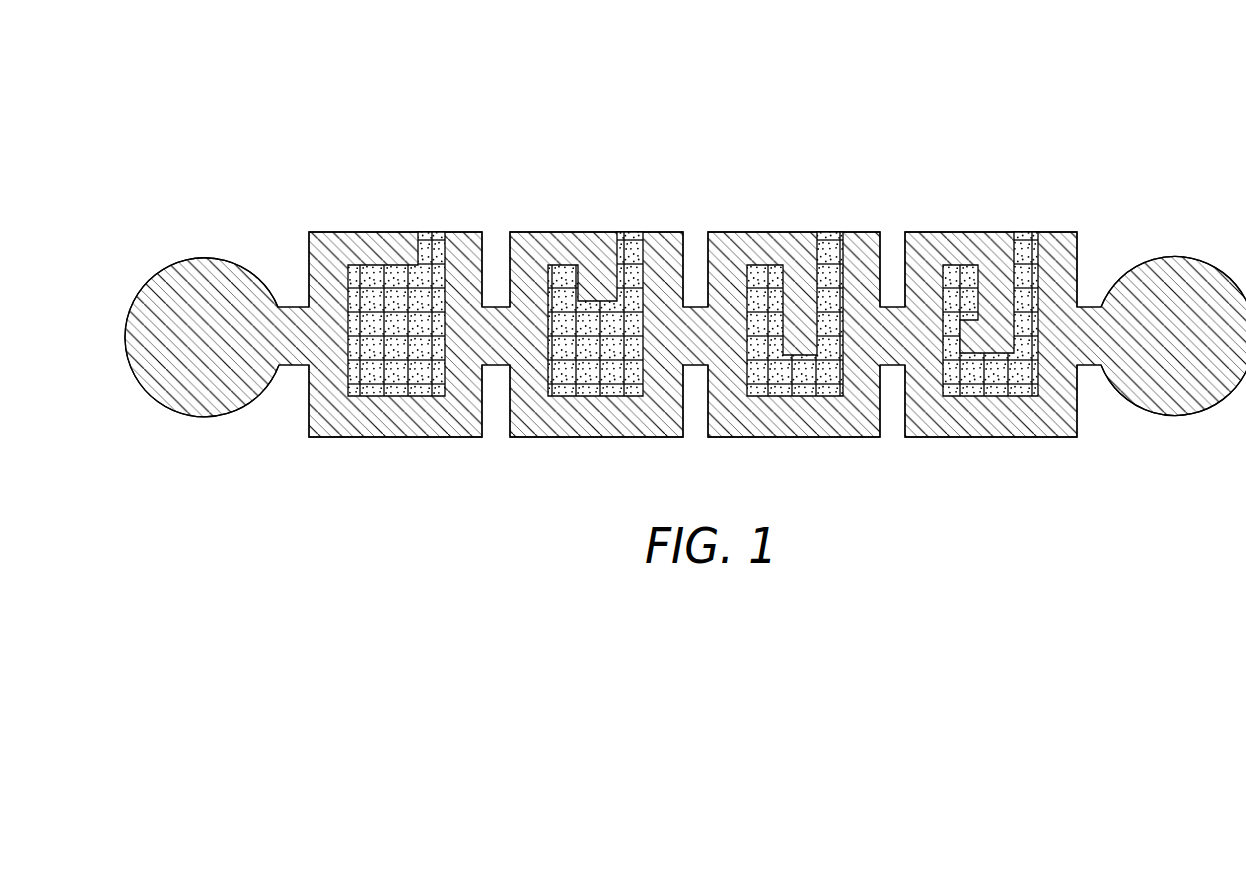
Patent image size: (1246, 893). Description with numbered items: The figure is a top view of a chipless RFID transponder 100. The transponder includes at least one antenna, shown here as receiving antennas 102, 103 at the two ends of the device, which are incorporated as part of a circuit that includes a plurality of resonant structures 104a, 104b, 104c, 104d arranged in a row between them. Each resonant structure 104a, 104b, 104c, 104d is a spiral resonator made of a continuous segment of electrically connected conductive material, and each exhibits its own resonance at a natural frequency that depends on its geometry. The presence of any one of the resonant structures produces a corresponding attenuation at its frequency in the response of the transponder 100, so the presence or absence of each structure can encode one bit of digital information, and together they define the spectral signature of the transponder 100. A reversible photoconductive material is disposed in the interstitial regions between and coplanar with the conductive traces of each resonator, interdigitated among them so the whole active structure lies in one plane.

The chipless RFID transponder 100 is at (380, 79).
The receiving antenna 102 is at (204, 258).
The receiving antenna 103 is at (1175, 258).
The resonant structure 104a is at (387, 212).
The resonant structure 104b is at (587, 212).
The resonant structure 104c is at (798, 212).
The resonant structure 104d is at (995, 212).